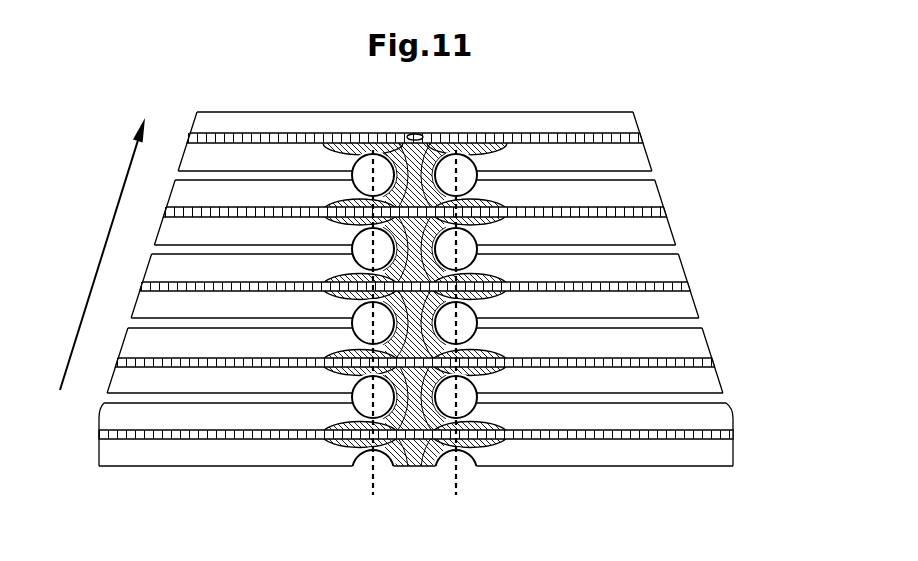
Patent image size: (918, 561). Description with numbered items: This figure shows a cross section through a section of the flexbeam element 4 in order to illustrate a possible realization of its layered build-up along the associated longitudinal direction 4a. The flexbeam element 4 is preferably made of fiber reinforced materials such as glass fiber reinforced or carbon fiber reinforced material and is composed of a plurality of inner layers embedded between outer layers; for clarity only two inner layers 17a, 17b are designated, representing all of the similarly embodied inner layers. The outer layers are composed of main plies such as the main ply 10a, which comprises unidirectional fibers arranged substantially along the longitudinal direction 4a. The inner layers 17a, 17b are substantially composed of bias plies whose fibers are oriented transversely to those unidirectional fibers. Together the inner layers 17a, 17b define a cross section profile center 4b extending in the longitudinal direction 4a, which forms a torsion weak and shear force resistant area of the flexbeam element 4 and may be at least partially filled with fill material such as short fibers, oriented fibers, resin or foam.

The flexbeam element 4 is at (586, 86).
The longitudinal direction 4a is at (120, 198).
The cross section profile center 4b is at (372, 472).
The main ply 10a is at (274, 125).
The inner layer 17a is at (672, 174).
The inner layer 17b is at (694, 250).